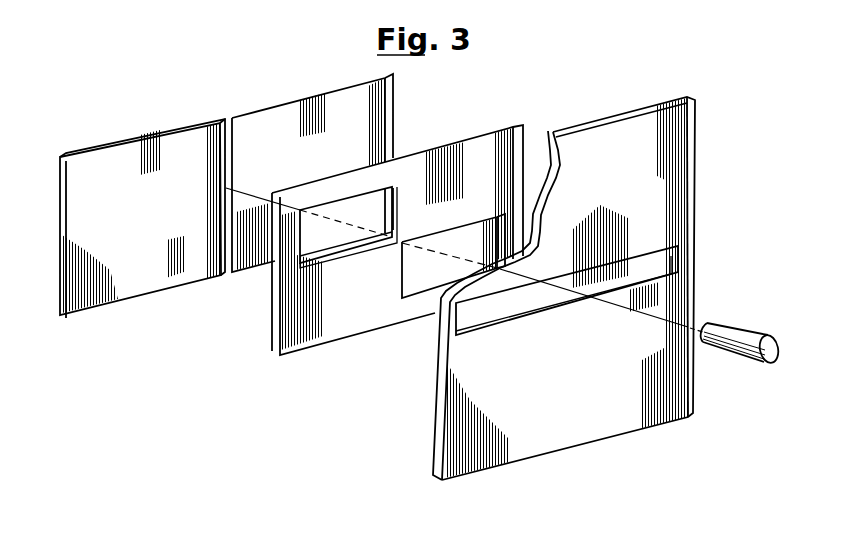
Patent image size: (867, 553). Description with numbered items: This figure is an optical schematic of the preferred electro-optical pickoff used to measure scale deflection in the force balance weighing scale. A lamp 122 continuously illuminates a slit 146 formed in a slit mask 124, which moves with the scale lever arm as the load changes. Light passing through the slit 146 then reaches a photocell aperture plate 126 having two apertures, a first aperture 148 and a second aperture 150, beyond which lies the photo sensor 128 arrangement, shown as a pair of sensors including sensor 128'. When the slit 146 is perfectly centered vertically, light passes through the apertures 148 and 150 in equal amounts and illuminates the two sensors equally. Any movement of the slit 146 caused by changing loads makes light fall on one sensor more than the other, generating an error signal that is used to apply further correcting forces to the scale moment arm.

The lamp 122 is at (773, 337).
The slit mask 124 is at (695, 205).
The slit 146 is at (672, 246).
The photocell aperture plate 126 is at (407, 322).
The aperture 148 is at (393, 188).
The aperture 150 is at (458, 229).
The photo sensor 128 is at (253, 201).
The sensor 128' is at (142, 223).